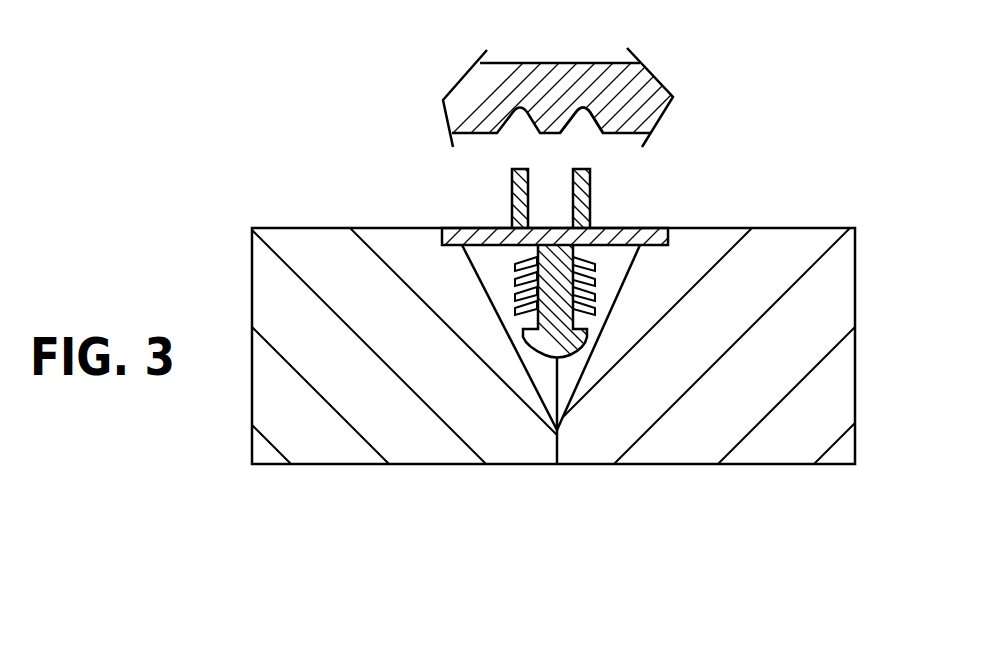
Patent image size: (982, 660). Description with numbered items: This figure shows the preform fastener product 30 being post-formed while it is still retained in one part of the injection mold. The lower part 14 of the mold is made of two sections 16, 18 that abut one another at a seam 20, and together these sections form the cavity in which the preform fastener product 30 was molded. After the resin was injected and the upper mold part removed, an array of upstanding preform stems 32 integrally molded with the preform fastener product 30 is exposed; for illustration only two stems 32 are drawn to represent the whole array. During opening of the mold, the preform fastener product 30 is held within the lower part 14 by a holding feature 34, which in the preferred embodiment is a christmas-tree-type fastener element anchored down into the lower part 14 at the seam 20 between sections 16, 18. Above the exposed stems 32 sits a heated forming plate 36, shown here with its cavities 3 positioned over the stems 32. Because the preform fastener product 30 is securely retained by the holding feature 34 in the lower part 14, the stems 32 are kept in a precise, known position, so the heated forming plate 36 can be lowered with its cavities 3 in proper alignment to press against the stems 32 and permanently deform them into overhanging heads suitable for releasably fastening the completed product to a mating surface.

The recess in component 3 is at (585, 131).
The lower part 14 is at (442, 485).
The lower part section 16 is at (400, 319).
The lower part section 18 is at (657, 357).
The seam 20 is at (557, 383).
The preform fastener product 30 is at (638, 228).
The preform stems 32 is at (512, 192).
The holding feature 34 is at (590, 333).
The heated forming plate 36 is at (555, 63).